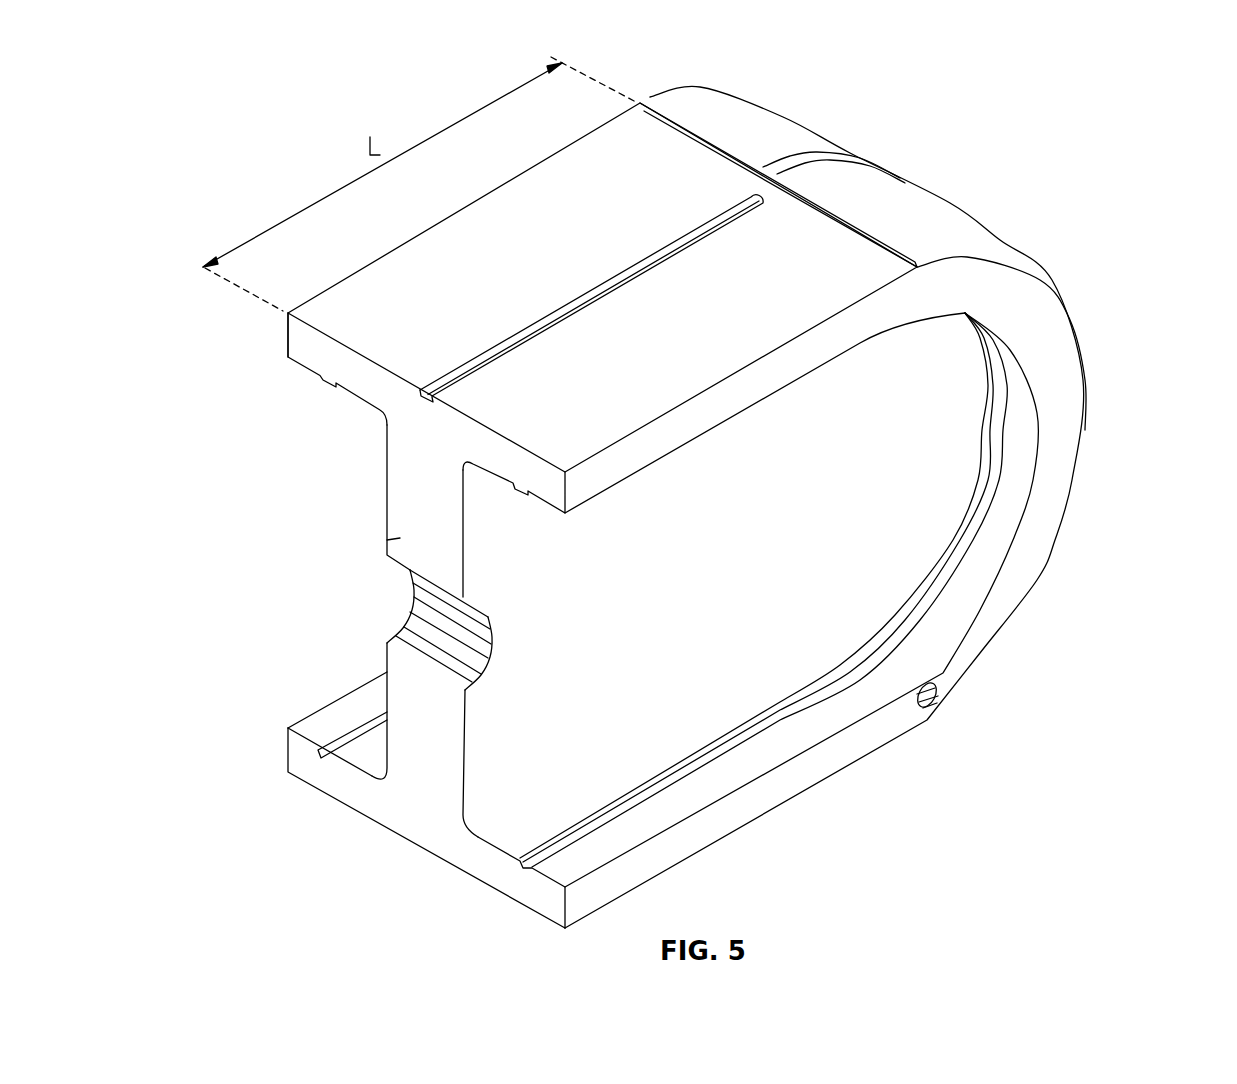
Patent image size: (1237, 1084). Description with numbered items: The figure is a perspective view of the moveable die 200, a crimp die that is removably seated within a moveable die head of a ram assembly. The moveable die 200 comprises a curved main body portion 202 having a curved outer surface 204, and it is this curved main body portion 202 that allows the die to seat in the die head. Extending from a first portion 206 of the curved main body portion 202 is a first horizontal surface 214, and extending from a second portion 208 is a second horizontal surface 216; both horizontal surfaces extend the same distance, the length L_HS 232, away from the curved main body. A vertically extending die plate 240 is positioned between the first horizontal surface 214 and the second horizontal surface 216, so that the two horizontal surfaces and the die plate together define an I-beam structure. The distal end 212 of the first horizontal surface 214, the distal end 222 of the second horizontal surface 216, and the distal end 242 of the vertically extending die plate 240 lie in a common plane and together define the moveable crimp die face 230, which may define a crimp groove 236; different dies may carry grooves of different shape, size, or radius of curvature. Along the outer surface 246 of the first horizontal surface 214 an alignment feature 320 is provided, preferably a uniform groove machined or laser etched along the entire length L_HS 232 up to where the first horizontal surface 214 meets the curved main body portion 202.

The moveable die 200 is at (1052, 150).
The curved main body portion 202 is at (1098, 482).
The curved outer surface 204 is at (1060, 290).
The first portion 206 is at (641, 102).
The second portion 208 is at (918, 720).
The distal end of the first horizontal surface 212 is at (288, 357).
The first horizontal surface 214 is at (483, 236).
The second horizontal surface 216 is at (735, 835).
The distal end of the second horizontal surface 222 is at (368, 805).
The moveable crimp die face 230 is at (296, 680).
The length L_HS 232 is at (370, 137).
The crimp groove 236 is at (420, 625).
The vertically extending die plate 240 is at (385, 470).
The distal end of the vertical die plate 242 is at (385, 540).
The outer surface of the first horizontal surface 246 is at (767, 260).
The alignment feature 320 is at (380, 407).